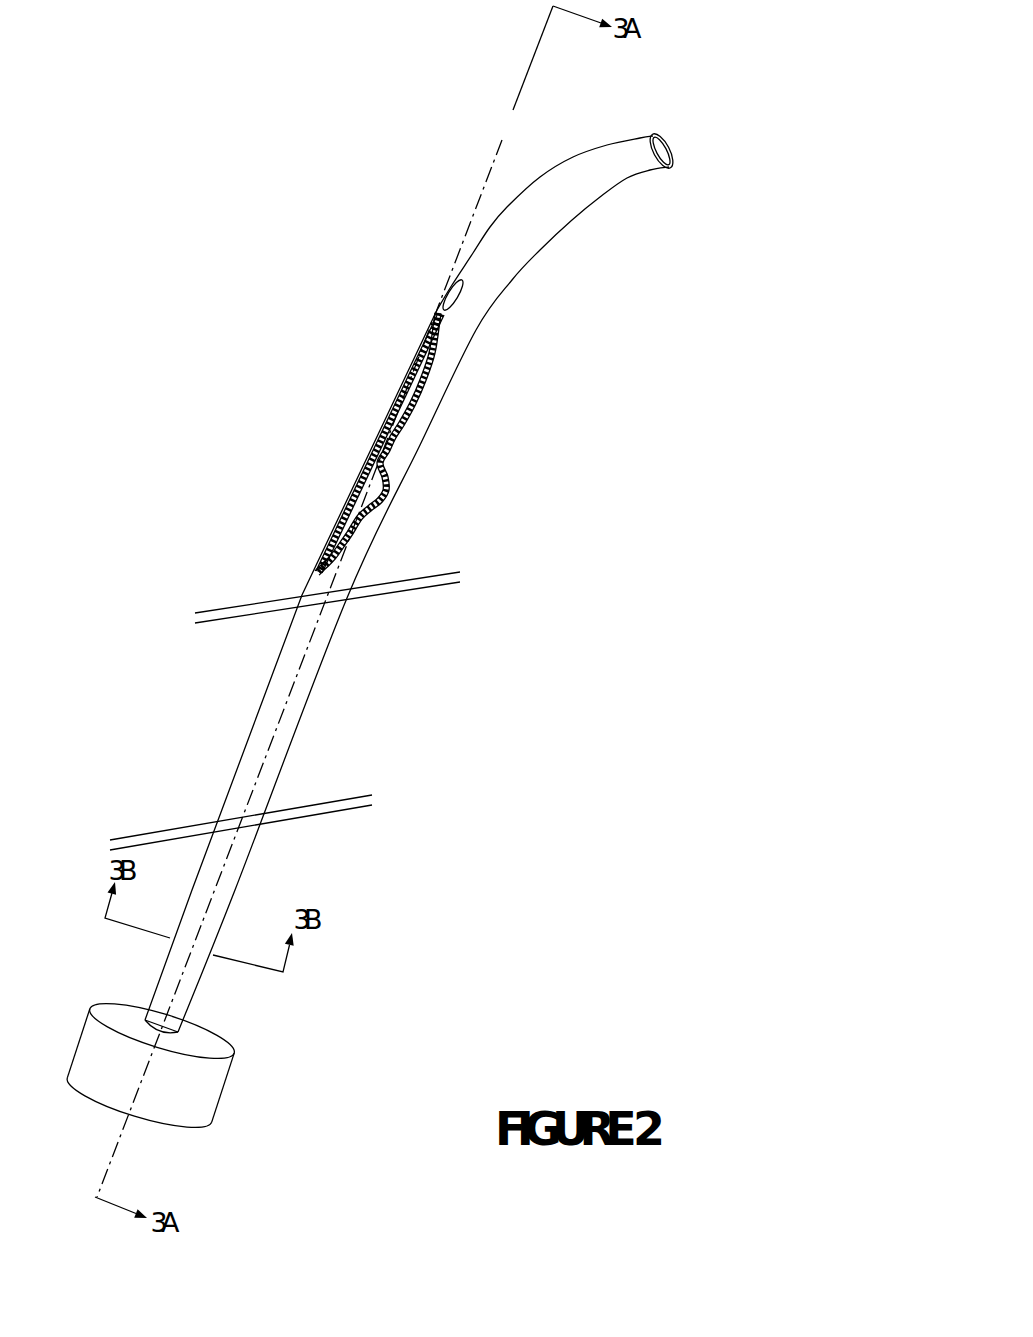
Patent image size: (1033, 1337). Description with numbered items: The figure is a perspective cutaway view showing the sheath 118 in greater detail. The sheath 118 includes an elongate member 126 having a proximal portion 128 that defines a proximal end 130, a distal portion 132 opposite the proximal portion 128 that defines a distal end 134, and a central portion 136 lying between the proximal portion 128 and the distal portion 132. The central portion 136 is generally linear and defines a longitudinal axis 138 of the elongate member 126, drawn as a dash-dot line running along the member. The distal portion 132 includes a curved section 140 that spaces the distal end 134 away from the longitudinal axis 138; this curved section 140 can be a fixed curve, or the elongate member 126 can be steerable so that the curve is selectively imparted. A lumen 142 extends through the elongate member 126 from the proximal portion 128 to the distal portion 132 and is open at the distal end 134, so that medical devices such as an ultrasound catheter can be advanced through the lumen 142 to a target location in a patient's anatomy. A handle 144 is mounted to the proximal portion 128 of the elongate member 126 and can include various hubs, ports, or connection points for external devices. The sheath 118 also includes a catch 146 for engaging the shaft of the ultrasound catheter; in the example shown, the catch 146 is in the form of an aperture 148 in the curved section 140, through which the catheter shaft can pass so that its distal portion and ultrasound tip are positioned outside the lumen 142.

The sheath 118 is at (193, 403).
The elongate member 126 is at (222, 808).
The proximal portion 128 is at (148, 1000).
The proximal end 130 is at (177, 1024).
The distal portion 132 is at (574, 221).
The distal end 134 is at (663, 135).
The central portion 136 is at (303, 730).
The longitudinal axis 138 is at (127, 1135).
The curved section 140 is at (514, 283).
The lumen 142 is at (367, 492).
The handle 144 is at (193, 1102).
The catch 146 is at (489, 350).
The aperture 148 is at (456, 313).